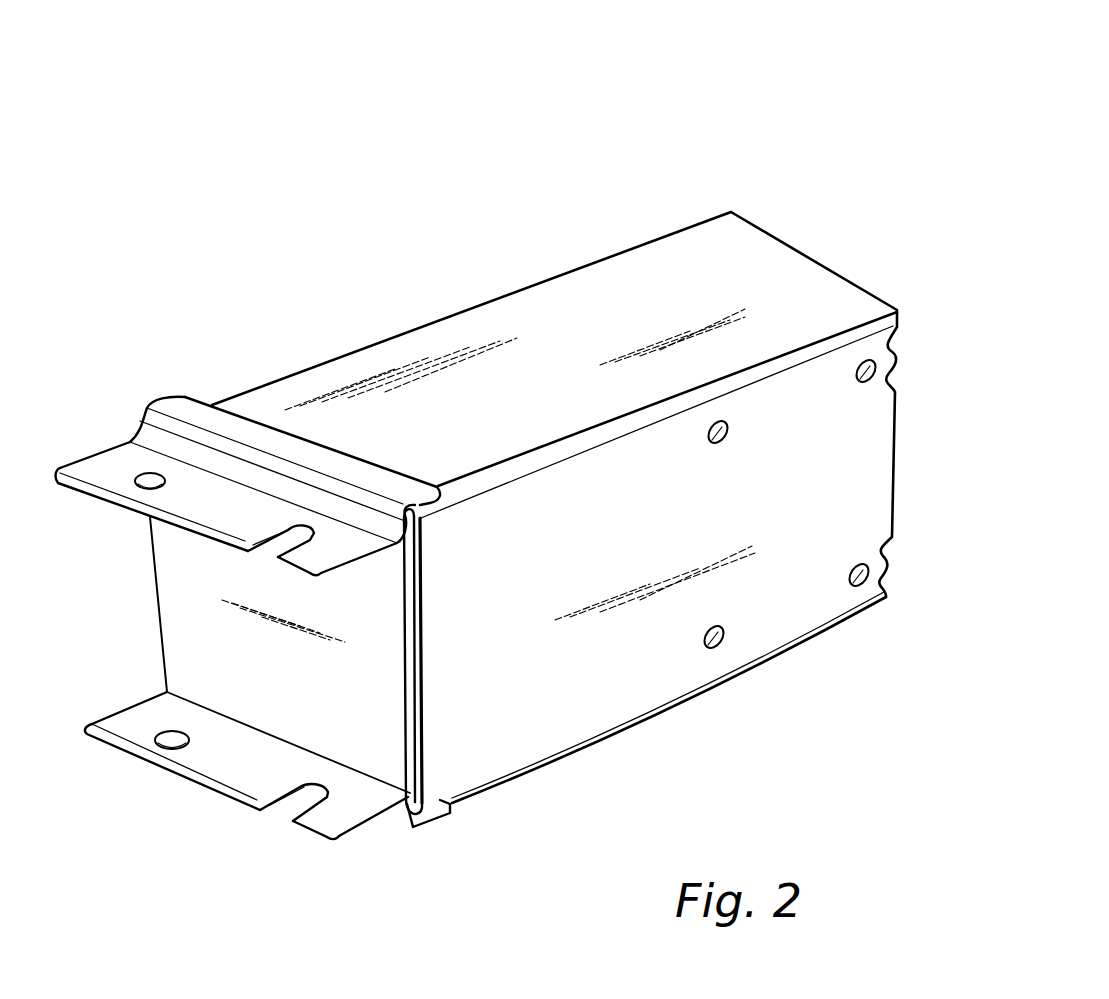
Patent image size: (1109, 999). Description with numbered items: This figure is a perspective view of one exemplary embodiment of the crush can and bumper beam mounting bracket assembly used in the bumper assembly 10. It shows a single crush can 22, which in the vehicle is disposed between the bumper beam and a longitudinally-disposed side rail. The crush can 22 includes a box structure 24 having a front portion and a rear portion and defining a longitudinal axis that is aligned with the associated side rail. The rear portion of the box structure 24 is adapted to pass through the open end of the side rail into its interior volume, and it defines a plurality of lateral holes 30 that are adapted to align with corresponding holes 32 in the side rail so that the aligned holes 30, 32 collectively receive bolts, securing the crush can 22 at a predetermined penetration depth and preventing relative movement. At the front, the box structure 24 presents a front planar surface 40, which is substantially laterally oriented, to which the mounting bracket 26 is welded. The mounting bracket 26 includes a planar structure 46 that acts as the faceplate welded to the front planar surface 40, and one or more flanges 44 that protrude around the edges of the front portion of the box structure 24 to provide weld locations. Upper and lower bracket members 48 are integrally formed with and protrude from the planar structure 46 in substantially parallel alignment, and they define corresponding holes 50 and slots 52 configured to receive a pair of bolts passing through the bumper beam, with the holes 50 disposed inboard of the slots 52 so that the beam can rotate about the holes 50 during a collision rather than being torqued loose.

The bumper assembly 10 is at (782, 98).
The crush can 22 is at (848, 230).
The box structure 24 is at (481, 304).
The mounting bracket 26 is at (112, 609).
The lateral holes 30 is at (801, 664).
The holes 32 is at (669, 697).
The front planar surface 40 is at (447, 658).
The flange 44 is at (152, 378).
The planar structure 46 is at (280, 690).
The upper and lower bracket members 48 is at (202, 780).
The holes 50 is at (149, 768).
The slots 52 is at (281, 846).